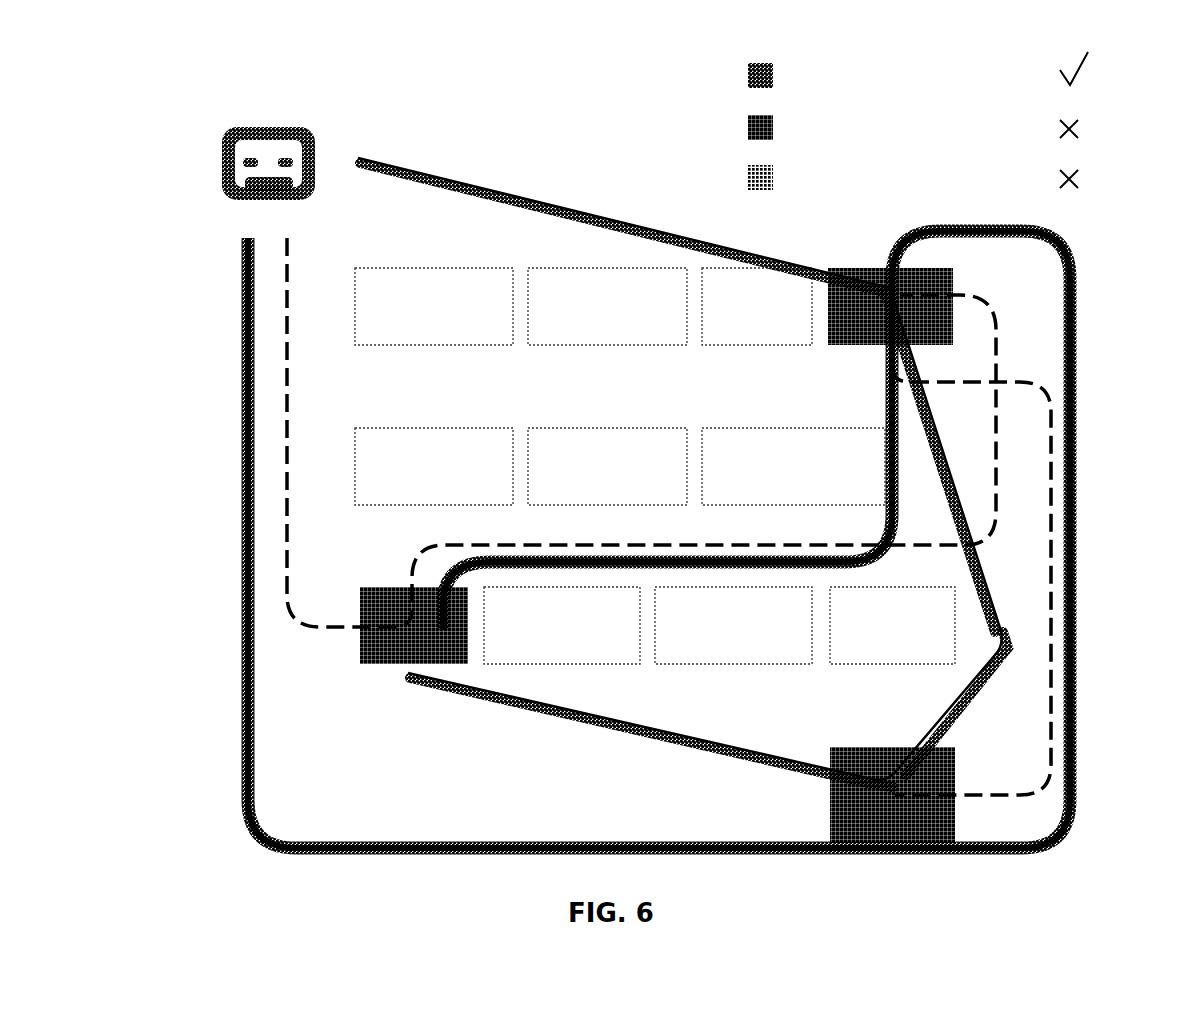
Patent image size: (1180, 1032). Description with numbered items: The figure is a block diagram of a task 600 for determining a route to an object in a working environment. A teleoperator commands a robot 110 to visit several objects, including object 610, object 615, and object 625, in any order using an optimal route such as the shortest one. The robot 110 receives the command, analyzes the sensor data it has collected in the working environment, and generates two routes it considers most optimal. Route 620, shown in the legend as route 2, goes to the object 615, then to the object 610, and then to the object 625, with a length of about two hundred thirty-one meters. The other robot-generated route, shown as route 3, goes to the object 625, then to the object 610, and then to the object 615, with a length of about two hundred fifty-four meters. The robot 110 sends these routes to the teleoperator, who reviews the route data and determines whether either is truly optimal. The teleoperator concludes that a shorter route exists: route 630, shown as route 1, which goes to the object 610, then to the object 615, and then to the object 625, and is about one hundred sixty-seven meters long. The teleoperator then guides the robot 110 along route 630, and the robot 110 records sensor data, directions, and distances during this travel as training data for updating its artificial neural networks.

The task 600 is at (766, 345).
The robot 110 is at (253, 128).
The object 610 is at (863, 273).
The object 615 is at (830, 825).
The route 620 is at (243, 490).
The object 625 is at (342, 630).
The route 630 is at (497, 187).
The route 1 is at (668, 466).
The route 2 is at (653, 528).
The route 3 is at (665, 502).